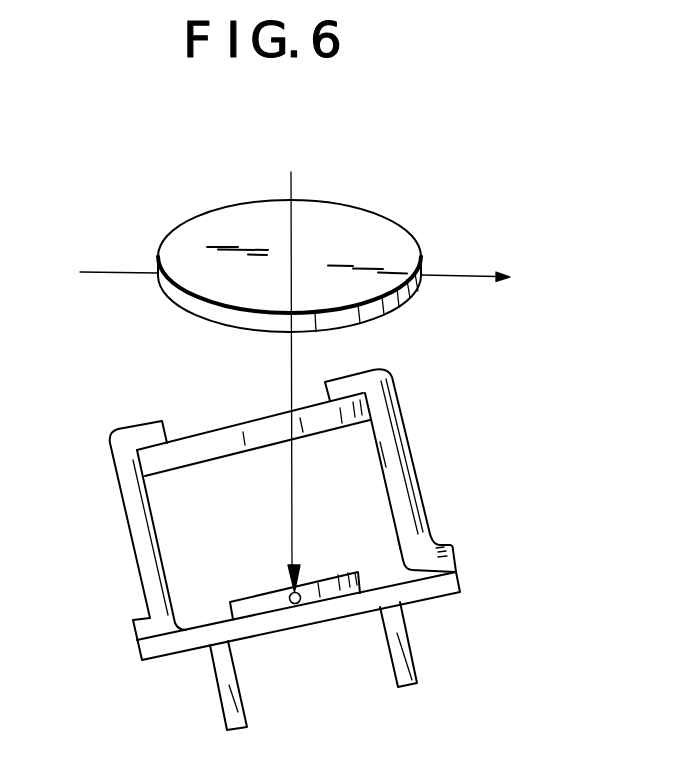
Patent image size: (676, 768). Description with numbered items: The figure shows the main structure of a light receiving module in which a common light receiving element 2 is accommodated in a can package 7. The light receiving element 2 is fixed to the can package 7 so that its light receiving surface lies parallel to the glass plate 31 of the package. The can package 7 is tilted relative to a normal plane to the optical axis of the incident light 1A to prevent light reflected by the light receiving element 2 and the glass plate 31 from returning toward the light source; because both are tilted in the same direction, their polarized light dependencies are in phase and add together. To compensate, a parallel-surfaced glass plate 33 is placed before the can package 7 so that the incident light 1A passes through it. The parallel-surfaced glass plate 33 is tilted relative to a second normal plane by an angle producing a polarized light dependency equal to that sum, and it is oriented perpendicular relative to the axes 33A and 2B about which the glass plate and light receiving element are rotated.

The parallel-surfaced glass plate 33 is at (178, 248).
The axis of rotation of the parallel-surfaced glass plate 33A is at (470, 278).
The incident light 1A is at (291, 182).
The glass plate 31 is at (201, 443).
The can package 7 is at (495, 497).
The light receiving element 2 is at (250, 602).
The axis of rotation of the light receiving element 2B is at (307, 603).